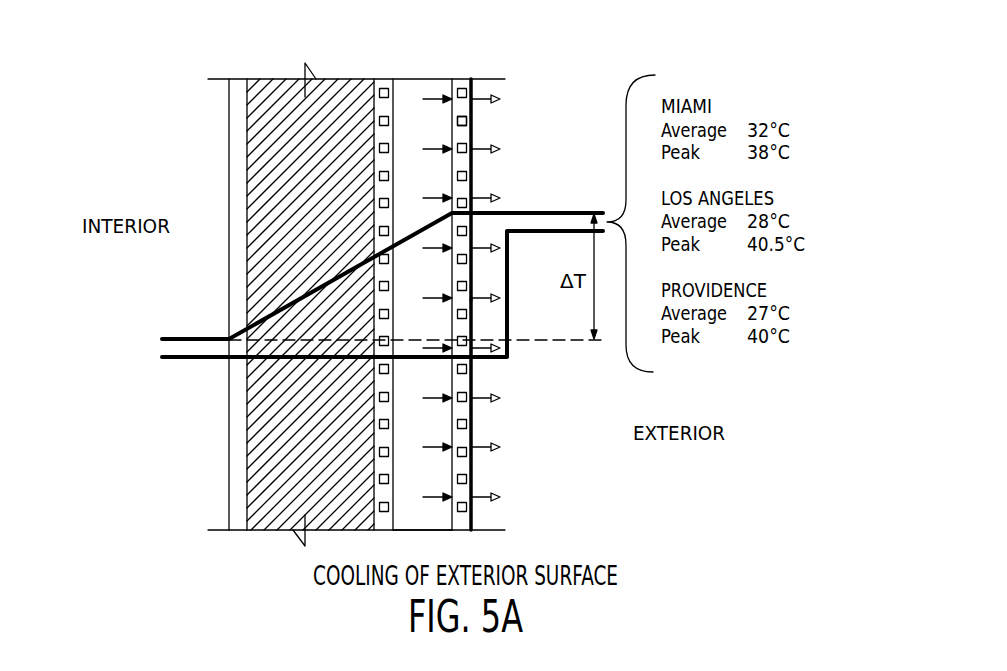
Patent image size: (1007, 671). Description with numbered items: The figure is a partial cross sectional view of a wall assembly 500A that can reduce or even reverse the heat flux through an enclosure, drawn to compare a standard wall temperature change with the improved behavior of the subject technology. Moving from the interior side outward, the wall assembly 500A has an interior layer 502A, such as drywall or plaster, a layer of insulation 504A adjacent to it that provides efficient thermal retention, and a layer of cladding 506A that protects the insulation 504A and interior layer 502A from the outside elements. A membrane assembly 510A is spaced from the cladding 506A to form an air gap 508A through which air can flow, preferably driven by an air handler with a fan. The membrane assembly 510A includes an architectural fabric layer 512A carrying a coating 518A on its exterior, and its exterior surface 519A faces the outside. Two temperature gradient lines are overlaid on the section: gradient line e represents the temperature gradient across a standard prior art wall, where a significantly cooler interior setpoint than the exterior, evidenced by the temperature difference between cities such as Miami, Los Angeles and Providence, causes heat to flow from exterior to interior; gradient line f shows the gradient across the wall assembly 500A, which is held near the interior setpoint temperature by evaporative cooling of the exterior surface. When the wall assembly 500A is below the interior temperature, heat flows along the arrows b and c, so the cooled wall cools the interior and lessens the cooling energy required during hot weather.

The wall assembly 500A is at (157, 128).
The interior layer 502A is at (227, 433).
The layer of insulation 504A is at (270, 492).
The layer of cladding 506A is at (378, 82).
The air gap 508A is at (433, 472).
The membrane assembly 510A is at (473, 165).
The architectural fabric layer 512A is at (463, 106).
The coating 518A is at (473, 413).
The exterior surface 519A is at (473, 89).
The arrow b is at (433, 500).
The arrow c is at (482, 443).
The gradient line e is at (172, 337).
The gradient line f is at (172, 360).